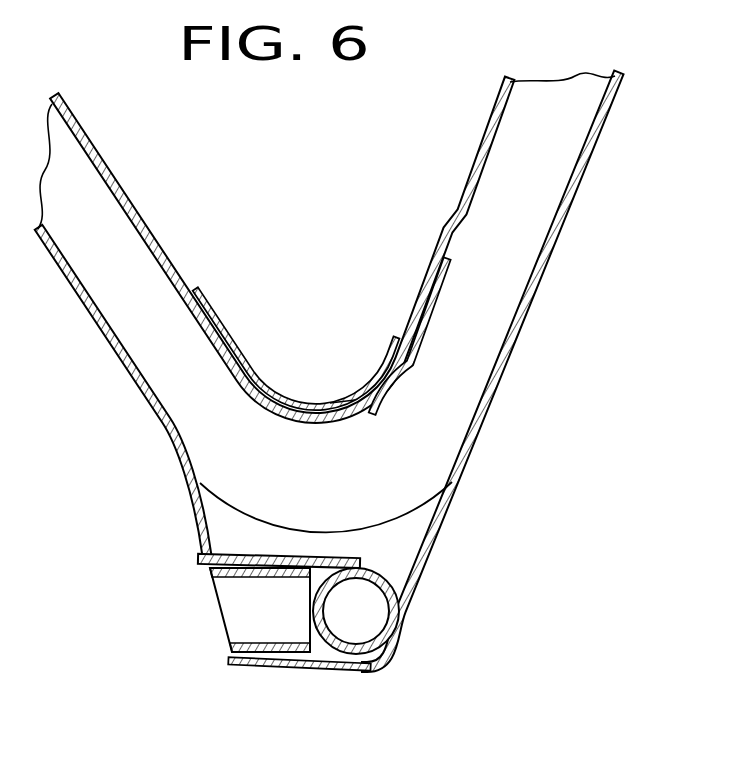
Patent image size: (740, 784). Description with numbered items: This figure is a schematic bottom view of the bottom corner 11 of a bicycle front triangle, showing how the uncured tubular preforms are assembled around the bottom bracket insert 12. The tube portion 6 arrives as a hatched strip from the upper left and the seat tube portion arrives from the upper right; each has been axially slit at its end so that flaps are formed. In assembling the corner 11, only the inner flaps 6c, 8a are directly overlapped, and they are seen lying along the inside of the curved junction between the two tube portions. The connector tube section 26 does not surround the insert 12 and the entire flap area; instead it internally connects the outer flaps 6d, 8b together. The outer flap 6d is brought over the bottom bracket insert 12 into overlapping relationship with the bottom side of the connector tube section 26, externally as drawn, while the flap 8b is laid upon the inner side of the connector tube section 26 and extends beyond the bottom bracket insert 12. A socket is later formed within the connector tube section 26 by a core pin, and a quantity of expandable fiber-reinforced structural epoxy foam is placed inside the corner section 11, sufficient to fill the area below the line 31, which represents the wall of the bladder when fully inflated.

The tube portion preform 6 is at (585, 173).
The inner flap 6c is at (230, 328).
The outer flap 6d is at (303, 673).
The inner flap 8a is at (437, 300).
The outer flap 8b is at (235, 552).
The bottom corner 11 is at (343, 393).
The bottom bracket insert 12 is at (358, 650).
The connector tube section 26 is at (232, 603).
The line representing bladder wall 31 is at (332, 532).